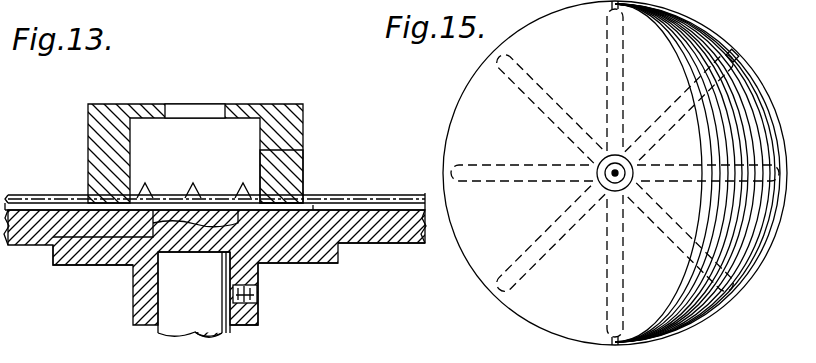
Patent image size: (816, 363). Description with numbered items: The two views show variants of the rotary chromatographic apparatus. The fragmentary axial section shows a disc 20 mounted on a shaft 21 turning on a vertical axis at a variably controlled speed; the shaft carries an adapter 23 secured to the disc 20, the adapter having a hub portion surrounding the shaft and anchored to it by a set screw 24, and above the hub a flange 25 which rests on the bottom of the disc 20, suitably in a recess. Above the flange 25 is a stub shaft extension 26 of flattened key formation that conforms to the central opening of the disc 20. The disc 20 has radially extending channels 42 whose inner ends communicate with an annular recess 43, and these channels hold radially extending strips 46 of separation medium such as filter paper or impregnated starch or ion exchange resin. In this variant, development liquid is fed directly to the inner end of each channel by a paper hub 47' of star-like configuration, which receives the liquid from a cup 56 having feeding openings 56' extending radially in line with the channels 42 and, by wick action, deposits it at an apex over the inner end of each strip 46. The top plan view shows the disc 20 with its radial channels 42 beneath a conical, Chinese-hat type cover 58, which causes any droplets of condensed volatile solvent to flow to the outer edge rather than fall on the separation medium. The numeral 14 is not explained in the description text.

In FIG. 13, the plate 14 is at (30, 230).
In FIG. 13, the disc 20 is at (410, 238).
In FIG. 15, the disc 20 is at (530, 308).
In FIG. 13, the shaft 21 is at (231, 330).
In FIG. 13, the adapter 23 is at (245, 268).
In FIG. 13, the set screw 24 is at (257, 297).
In FIG. 13, the flange 25 is at (84, 253).
In FIG. 13, the stub shaft extension 26 is at (222, 203).
In FIG. 13, the radially extending channels 42 is at (362, 210).
In FIG. 15, the radially extending channels 42 is at (697, 263).
In FIG. 13, the annular recess 43 is at (302, 199).
In FIG. 13, the strips of separation medium 46 is at (413, 210).
In FIG. 13, the paper hub 47' is at (163, 174).
In FIG. 13, the cup 56 is at (218, 153).
In FIG. 13, the feeding openings 56' is at (299, 167).
In FIG. 15, the conical cover 58 is at (615, 173).